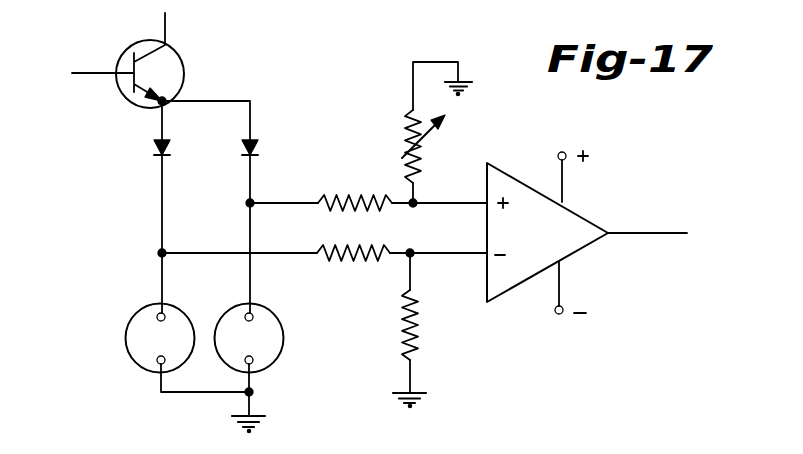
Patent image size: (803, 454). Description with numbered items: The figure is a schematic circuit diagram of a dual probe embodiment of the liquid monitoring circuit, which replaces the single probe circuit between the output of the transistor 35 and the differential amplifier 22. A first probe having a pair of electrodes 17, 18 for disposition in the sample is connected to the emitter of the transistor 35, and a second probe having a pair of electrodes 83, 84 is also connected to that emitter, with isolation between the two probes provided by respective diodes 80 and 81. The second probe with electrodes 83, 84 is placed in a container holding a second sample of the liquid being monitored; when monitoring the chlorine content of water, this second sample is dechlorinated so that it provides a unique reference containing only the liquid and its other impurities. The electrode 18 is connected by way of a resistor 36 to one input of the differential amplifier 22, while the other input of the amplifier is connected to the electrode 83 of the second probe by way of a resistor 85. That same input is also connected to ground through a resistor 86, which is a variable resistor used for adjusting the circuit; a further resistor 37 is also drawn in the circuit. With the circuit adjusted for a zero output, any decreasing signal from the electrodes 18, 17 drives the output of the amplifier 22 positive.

The electrode 17 is at (156, 362).
The electrode 18 is at (156, 318).
The differential amplifier 22 is at (549, 243).
The transistor 35 is at (186, 57).
The resistor 36 is at (357, 262).
The resistor 37 is at (398, 306).
The diode 80 is at (154, 147).
The diode 81 is at (258, 150).
The electrode 83 is at (254, 317).
The electrode 84 is at (252, 363).
The resistor 85 is at (349, 192).
The variable resistor 86 is at (424, 151).